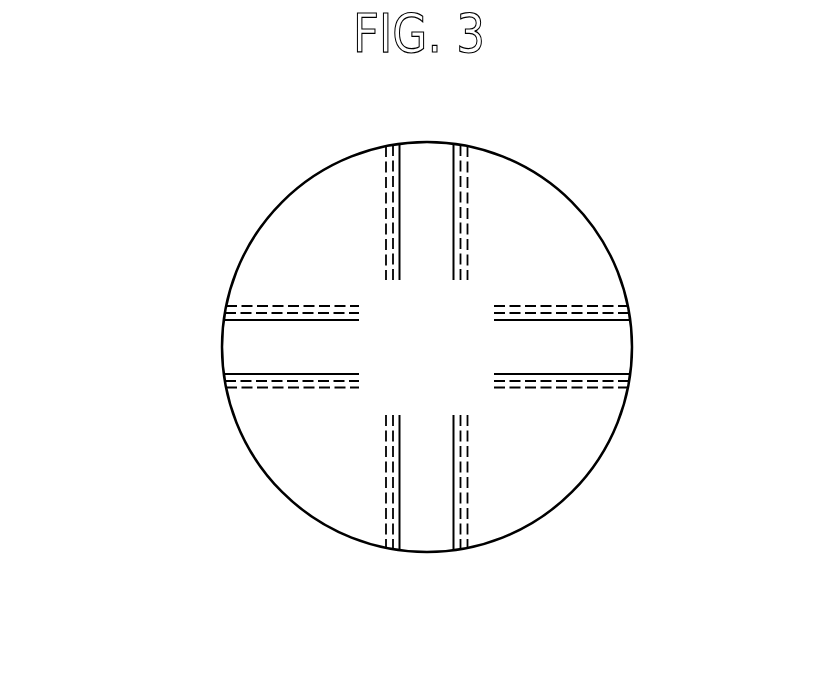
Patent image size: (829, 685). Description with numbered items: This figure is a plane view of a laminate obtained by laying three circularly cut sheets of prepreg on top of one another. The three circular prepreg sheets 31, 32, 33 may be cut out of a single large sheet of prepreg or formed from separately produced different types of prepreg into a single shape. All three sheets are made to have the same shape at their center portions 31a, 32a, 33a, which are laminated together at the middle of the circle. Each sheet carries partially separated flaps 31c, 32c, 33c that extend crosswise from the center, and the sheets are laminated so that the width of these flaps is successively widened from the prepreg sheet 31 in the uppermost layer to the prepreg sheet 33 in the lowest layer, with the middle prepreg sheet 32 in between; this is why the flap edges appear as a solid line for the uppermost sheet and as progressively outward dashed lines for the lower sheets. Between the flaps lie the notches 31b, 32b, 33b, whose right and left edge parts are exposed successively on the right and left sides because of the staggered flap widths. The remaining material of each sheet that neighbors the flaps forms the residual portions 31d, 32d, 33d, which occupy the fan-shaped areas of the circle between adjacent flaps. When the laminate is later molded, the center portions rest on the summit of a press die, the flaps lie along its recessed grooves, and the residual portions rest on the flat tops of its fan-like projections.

The prepreg sheet 31 is at (200, 220).
The prepreg sheet 32 is at (255, 261).
The prepreg sheet 33 is at (283, 265).
The center portion 31a is at (463, 373).
The center portion 32a is at (678, 515).
The center portion 33a is at (740, 515).
The notch 31b is at (608, 320).
The notch 32b is at (557, 313).
The notch 33b is at (528, 306).
The partially separated flap 31c is at (435, 487).
The partially separated flap 32c is at (494, 526).
The partially separated flap 33c is at (522, 526).
The residual portion 31d is at (330, 483).
The residual portion 32d is at (238, 567).
The residual portion 33d is at (302, 567).